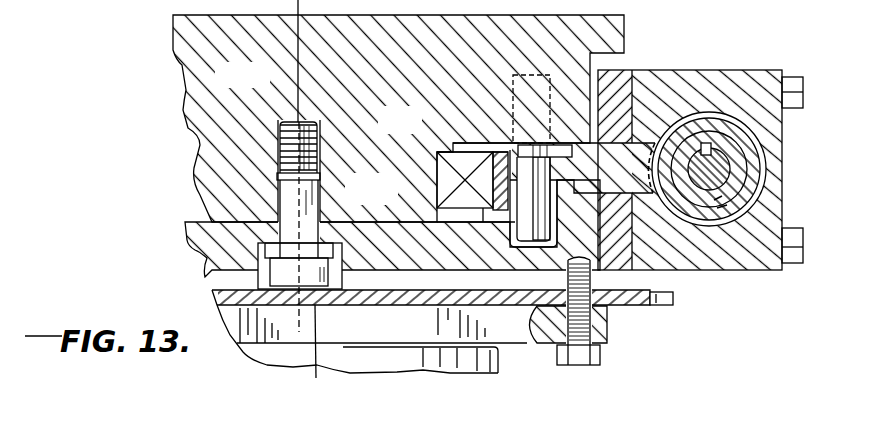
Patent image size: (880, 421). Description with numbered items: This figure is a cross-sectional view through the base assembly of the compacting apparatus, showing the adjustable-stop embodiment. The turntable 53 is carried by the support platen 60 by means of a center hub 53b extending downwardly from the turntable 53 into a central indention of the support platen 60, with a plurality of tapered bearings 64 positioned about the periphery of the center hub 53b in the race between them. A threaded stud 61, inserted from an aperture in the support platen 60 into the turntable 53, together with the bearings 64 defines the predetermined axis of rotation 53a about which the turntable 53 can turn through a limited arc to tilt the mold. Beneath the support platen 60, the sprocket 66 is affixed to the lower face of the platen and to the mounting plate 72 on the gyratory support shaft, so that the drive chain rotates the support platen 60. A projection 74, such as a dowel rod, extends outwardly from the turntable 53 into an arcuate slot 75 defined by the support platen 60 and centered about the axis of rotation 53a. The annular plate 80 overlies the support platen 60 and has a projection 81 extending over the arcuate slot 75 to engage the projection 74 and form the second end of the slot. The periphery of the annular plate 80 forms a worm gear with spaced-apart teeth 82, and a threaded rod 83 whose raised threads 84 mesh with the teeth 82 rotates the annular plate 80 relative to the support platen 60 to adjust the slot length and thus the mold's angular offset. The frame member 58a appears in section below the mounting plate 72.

The turntable 53 is at (195, 108).
The predetermined axis of rotation 53a is at (298, 93).
The center hub 53b is at (392, 203).
The frame member 58a is at (317, 338).
The support platen 60 is at (218, 258).
The threaded stud 61 is at (283, 195).
The bearings 64 is at (433, 153).
The sprocket 66 is at (658, 305).
The mounting plate 72 is at (607, 333).
The projection 74 is at (528, 212).
The arcuate slot 75 is at (530, 237).
The annular plate 80 is at (612, 147).
The projection 81 is at (517, 133).
The teeth 82 is at (658, 148).
The threaded rod 83 is at (718, 203).
The raised threads 84 is at (713, 123).